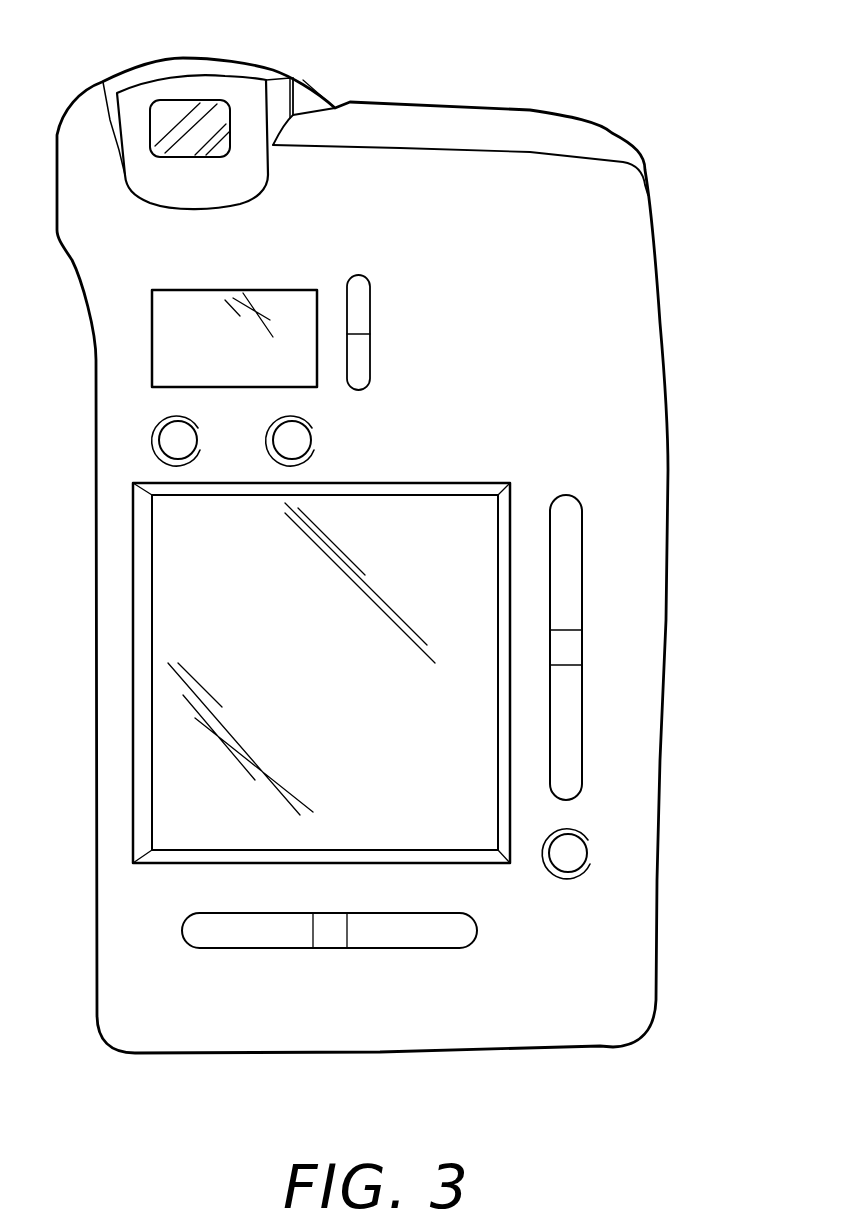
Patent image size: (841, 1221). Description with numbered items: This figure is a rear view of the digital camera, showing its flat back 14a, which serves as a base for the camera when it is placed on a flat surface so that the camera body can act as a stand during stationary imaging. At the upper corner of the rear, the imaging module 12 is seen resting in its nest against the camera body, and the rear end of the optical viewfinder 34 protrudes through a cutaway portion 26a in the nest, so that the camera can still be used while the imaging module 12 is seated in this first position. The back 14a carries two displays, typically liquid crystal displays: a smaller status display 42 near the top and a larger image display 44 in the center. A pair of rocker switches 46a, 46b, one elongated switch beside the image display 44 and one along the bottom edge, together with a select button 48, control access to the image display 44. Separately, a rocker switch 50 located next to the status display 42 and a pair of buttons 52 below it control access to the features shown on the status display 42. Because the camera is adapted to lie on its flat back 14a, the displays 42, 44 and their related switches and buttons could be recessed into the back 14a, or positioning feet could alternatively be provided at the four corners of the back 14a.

The imaging module 12 is at (317, 93).
The flat back 14a is at (617, 338).
The cutaway portion 26a is at (272, 173).
The optical viewfinder 34 is at (167, 107).
The status display 42 is at (198, 294).
The image display 44 is at (422, 502).
The rocker switch 46a is at (578, 593).
The rocker switch 46b is at (247, 940).
The select button 48 is at (583, 850).
The rocker switch 50 is at (371, 320).
The buttons 52 is at (278, 438).